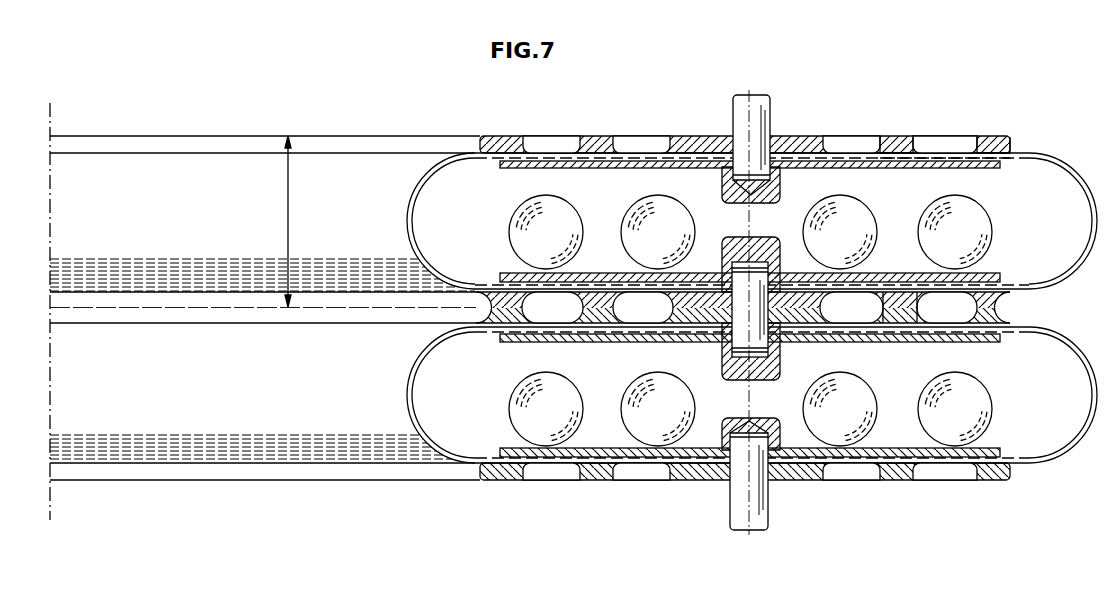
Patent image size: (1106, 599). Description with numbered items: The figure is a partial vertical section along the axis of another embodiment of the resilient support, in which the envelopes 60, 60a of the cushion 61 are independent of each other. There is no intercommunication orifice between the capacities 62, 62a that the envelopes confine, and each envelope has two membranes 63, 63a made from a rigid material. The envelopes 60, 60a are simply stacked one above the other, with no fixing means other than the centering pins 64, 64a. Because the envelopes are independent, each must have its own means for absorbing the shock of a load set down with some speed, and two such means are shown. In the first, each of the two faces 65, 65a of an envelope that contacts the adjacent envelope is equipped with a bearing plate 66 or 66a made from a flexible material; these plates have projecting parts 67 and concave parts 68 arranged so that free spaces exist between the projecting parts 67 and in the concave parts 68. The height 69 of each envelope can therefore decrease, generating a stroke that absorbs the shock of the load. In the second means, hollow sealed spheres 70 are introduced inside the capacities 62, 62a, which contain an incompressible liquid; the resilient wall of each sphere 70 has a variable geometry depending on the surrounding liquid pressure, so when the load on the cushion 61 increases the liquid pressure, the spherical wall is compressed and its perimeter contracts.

The envelope 60 is at (425, 178).
The envelope 60a is at (411, 412).
The cushion 61 is at (1070, 456).
The capacity 62 is at (466, 194).
The capacity 62a is at (459, 412).
The membrane 63 is at (546, 160).
The membrane 63a is at (598, 272).
The centering pin 64 is at (734, 118).
The centering pin 64a is at (722, 252).
The face 65 is at (947, 154).
The face 65a is at (940, 300).
The bearing plate 66 is at (882, 140).
The bearing plate 66a is at (919, 300).
The projecting part 67 is at (980, 151).
The concave part 68 is at (930, 152).
The height 69 is at (306, 221).
The hollow sealed sphere 70 is at (986, 226).